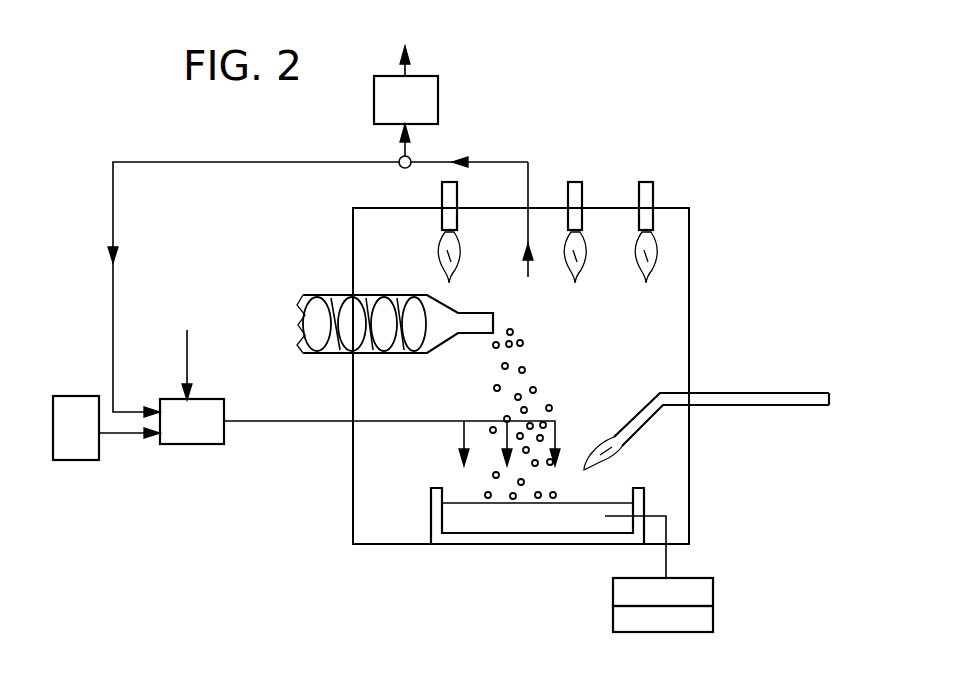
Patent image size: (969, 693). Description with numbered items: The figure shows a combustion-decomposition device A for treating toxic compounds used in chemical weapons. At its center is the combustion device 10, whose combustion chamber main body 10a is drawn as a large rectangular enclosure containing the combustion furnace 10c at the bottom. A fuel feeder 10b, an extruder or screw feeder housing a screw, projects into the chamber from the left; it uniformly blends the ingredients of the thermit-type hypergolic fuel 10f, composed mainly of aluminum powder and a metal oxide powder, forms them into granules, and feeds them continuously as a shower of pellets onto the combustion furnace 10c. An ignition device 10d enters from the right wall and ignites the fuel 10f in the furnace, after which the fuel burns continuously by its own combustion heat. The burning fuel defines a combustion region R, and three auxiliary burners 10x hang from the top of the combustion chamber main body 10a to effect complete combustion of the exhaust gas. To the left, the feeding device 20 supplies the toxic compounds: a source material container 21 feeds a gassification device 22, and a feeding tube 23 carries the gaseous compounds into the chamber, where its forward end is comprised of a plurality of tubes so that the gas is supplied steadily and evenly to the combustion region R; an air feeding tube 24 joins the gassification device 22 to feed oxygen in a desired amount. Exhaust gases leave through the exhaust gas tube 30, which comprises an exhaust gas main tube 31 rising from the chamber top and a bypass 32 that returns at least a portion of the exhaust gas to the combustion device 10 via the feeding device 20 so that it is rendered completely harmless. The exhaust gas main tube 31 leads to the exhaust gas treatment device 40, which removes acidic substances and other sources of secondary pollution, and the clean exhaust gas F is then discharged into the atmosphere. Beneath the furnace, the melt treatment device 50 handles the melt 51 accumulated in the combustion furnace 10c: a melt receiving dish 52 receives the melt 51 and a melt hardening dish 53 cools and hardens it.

The combustion device 10 is at (562, 376).
The combustion chamber main body 10a is at (690, 340).
The fuel feeder 10b is at (332, 293).
The combustion furnace 10c is at (645, 497).
The ignition device 10d is at (750, 407).
The thermit-type hypergolic fuel 10f is at (522, 344).
The auxiliary burners 10x is at (441, 212).
The feeding device 20 is at (306, 458).
The source material container 21 is at (72, 461).
The gassification device 22 is at (198, 445).
The feeding tube 23 is at (290, 422).
The air feeding tube 24 is at (187, 355).
The exhaust gas tube 30 is at (354, 259).
The exhaust gas main tube 31 is at (530, 163).
The bypass 32 is at (113, 198).
The exhaust gas treatment device 40 is at (462, 100).
The melt treatment device 50 is at (598, 575).
The melt 51 is at (463, 519).
The melt receiving dish 52 is at (710, 590).
The melt hardening dish 53 is at (710, 622).
The combustion decomposition device A is at (712, 214).
The clean exhaust gas F is at (425, 66).
The combustion region R is at (543, 373).